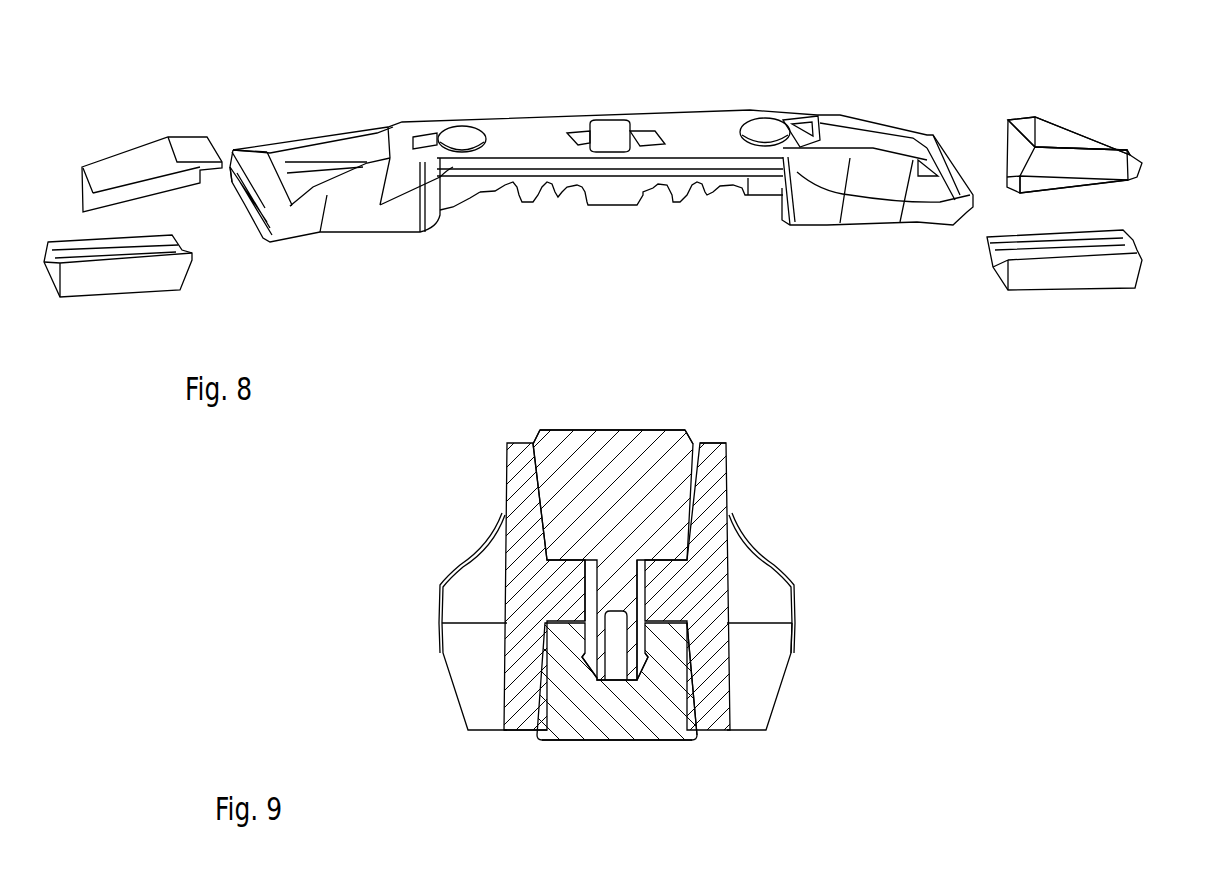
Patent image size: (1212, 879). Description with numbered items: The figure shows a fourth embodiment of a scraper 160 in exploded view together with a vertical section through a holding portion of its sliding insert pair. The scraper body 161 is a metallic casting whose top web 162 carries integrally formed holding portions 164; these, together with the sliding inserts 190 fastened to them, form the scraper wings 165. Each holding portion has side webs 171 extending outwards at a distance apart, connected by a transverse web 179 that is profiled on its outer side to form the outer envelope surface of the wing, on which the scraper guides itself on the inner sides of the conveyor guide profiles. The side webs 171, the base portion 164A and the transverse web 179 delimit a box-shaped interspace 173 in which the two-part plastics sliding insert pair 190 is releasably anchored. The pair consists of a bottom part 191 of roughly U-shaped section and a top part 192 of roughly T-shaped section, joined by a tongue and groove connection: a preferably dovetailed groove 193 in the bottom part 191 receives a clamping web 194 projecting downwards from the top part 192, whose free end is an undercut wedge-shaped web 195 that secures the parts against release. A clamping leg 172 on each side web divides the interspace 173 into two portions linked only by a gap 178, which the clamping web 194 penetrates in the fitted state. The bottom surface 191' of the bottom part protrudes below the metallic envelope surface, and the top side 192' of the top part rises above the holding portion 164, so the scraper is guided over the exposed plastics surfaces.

In FIG. 8, the scraper 160 is at (399, 246).
In FIG. 9, the scraper 160 is at (503, 750).
In FIG. 8, the scraper body 161 is at (780, 100).
In FIG. 8, the top web 162 is at (622, 182).
In FIG. 8, the holding portion 164 is at (297, 120).
In FIG. 9, the holding portion 164 is at (720, 728).
In FIG. 8, the base portion 164A is at (422, 195).
In FIG. 8, the scraper wing 165 is at (233, 127).
In FIG. 8, the side web 171 is at (328, 135).
In FIG. 9, the side web 171 is at (720, 472).
In FIG. 9, the clamping leg 172 is at (537, 603).
In FIG. 8, the interspace 173 is at (362, 138).
In FIG. 9, the interspace 173 is at (645, 750).
In FIG. 9, the gap 178 is at (585, 597).
In FIG. 8, the transverse web 179 is at (252, 183).
In FIG. 9, the transverse web 179 is at (773, 665).
In FIG. 8, the sliding insert pair 190 is at (140, 127).
In FIG. 9, the sliding insert pair 190 is at (553, 423).
In FIG. 8, the bottom part 191 is at (593, 291).
In FIG. 9, the bottom part 191 is at (615, 724).
In FIG. 9, the bottom surface 191' is at (616, 783).
In FIG. 8, the top part 192 is at (1065, 90).
In FIG. 9, the top part 192 is at (623, 397).
In FIG. 9, the top side 192' is at (613, 398).
In FIG. 8, the groove 193 is at (1033, 240).
In FIG. 9, the groove 193 is at (638, 675).
In FIG. 8, the clamping web 194 is at (1097, 177).
In FIG. 9, the clamping web 194 is at (624, 588).
In FIG. 9, the wedge-shaped web 195 is at (597, 666).